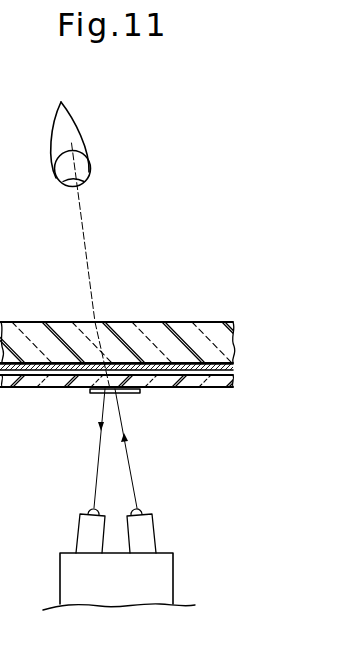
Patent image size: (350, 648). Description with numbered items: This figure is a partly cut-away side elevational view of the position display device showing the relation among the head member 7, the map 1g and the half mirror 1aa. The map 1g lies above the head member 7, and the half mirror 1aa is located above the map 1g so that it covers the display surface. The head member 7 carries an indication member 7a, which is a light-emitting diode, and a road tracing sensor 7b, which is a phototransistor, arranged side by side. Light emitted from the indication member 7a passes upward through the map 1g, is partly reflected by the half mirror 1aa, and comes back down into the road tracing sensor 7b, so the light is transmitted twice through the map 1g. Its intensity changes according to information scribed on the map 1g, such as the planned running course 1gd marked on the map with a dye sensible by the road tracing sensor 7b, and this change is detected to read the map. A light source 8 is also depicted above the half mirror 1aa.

The lamp 8 is at (90, 165).
The half mirror 1aa is at (222, 342).
The map 1g is at (230, 382).
The planned running course 1gd is at (133, 393).
The head member 7 is at (163, 583).
The indication member 7a is at (143, 537).
The road tracing sensor 7b is at (93, 537).